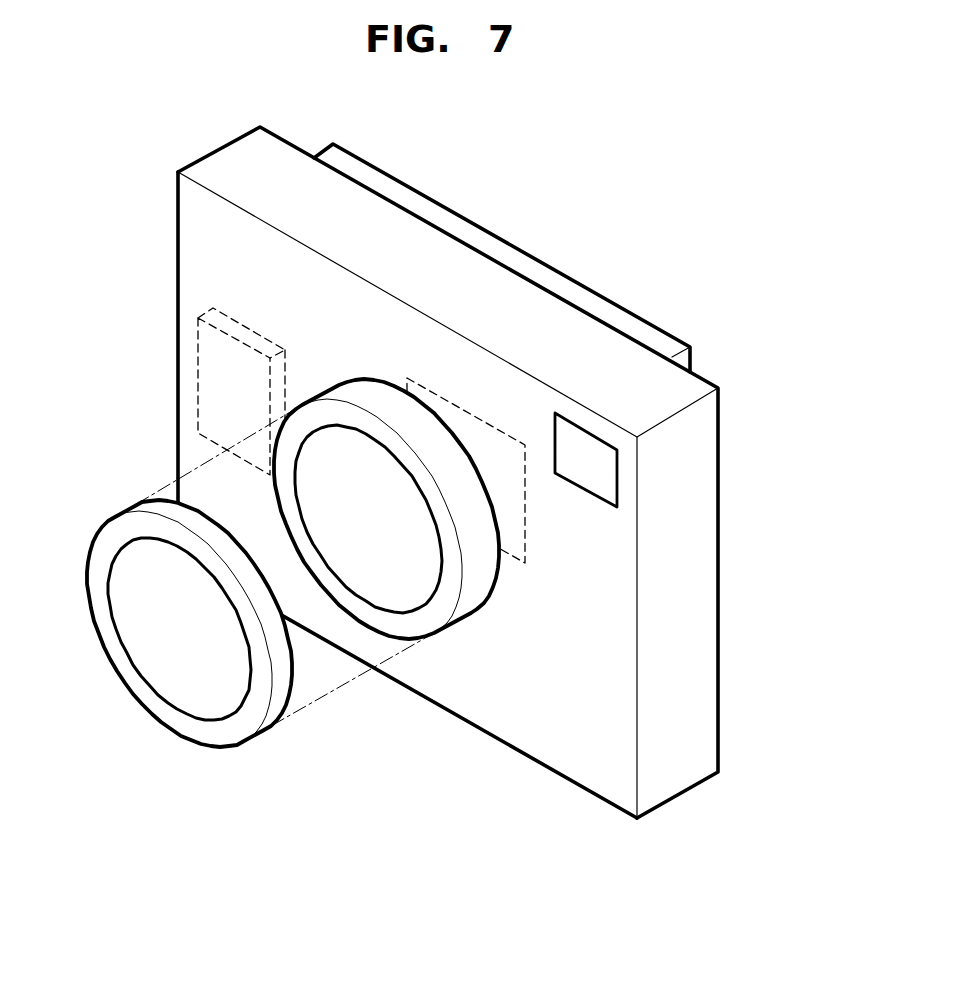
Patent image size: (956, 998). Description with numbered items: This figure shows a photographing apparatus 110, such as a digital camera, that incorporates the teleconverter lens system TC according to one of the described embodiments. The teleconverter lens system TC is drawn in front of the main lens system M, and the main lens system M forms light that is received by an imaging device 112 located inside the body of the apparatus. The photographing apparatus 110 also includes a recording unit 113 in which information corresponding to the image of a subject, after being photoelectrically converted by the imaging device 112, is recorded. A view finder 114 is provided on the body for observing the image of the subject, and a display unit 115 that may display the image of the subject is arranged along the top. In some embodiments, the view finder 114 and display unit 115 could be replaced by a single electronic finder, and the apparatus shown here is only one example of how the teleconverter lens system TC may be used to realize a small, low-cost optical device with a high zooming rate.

The photographing apparatus 110 is at (522, 738).
The imaging device 112 is at (518, 521).
The recording unit 113 is at (205, 389).
The view finder 114 is at (605, 473).
The display unit 115 is at (505, 248).
The main lens system M is at (382, 620).
The teleconverter lens system TC is at (177, 730).